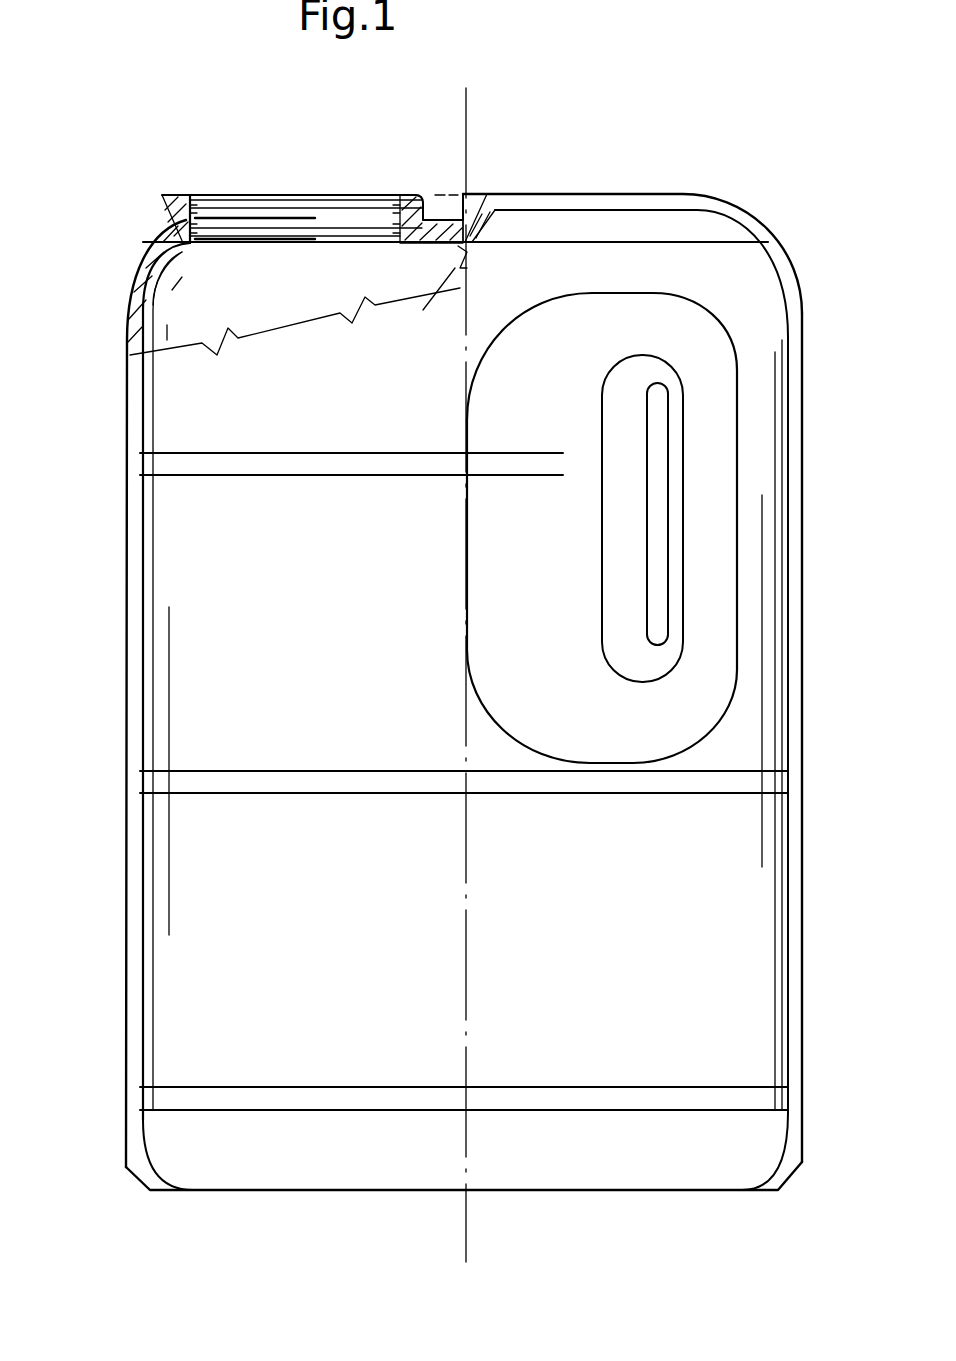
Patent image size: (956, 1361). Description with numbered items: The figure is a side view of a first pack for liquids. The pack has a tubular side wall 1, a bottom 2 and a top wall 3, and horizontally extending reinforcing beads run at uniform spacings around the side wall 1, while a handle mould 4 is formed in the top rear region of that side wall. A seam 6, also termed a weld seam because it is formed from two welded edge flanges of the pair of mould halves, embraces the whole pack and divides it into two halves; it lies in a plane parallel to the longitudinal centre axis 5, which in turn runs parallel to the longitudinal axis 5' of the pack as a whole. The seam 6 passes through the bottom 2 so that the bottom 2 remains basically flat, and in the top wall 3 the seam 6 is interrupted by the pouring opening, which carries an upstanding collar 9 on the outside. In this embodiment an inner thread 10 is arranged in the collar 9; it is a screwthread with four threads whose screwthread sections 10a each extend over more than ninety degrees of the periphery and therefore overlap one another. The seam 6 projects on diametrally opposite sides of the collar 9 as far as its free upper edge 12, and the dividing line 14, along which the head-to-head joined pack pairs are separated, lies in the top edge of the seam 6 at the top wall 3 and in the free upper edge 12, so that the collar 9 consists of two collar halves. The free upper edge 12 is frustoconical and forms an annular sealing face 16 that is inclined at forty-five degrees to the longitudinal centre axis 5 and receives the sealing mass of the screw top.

The side wall 1 is at (762, 850).
The bottom 2 is at (230, 1193).
The top wall 3 is at (572, 208).
The handle mould 4 is at (657, 510).
The longitudinal centre axis 5 is at (312, 170).
The longitudinal axis 5' is at (494, 660).
The seam 6 is at (143, 267).
The collar 9 is at (191, 200).
The inner thread 10 is at (327, 227).
The screwthread section 10a is at (213, 250).
The free upper edge 12 is at (172, 193).
The dividing line 14 is at (470, 193).
The sealing face 16 is at (400, 207).